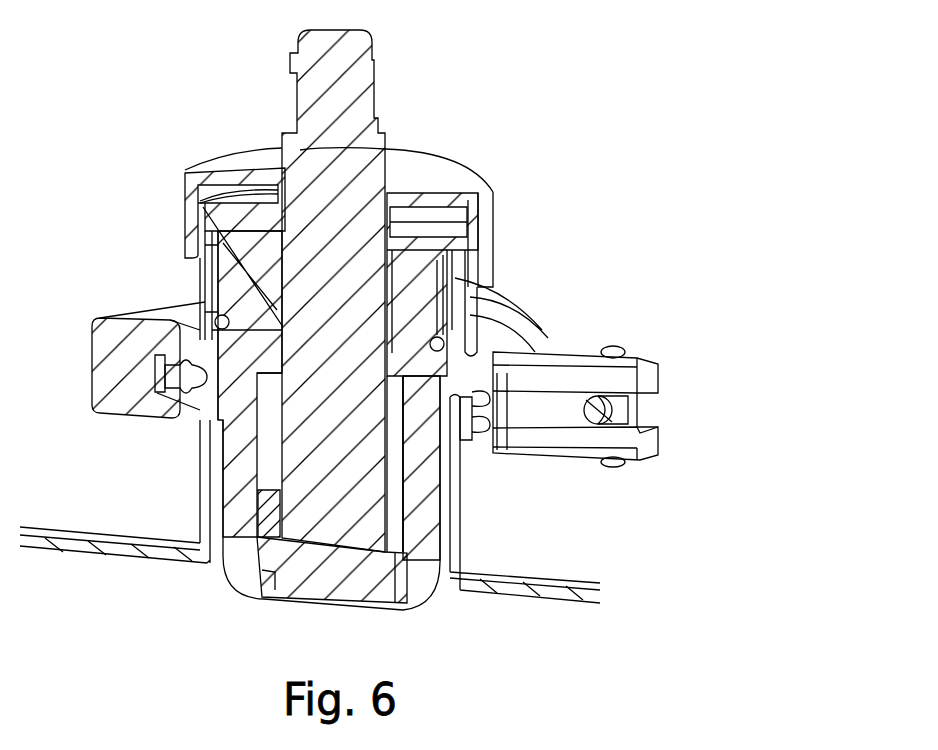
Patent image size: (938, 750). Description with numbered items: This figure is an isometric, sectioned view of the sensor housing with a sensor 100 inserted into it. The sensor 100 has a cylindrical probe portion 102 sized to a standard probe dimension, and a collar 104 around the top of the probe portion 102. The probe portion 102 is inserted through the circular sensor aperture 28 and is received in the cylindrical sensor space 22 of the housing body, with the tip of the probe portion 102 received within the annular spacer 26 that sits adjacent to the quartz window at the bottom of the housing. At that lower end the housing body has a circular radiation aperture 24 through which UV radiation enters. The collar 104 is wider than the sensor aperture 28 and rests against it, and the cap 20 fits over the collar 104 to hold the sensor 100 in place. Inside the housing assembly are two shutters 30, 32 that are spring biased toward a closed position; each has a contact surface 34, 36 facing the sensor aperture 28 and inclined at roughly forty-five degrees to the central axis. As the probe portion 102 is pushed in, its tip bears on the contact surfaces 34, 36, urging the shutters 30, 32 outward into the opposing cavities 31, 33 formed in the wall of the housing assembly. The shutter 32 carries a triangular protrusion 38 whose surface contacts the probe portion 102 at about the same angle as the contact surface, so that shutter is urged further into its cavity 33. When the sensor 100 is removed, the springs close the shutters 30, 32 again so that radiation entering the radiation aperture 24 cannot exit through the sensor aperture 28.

The sensor 100 is at (355, 148).
The collar 104 is at (470, 183).
The cap 20 is at (473, 183).
The sensor aperture 28 is at (380, 238).
The contact surface 34 is at (413, 275).
The cylindrical probe portion 102 is at (423, 317).
The shutter 30 is at (470, 307).
The cavity 31 is at (462, 350).
The sensor space 22 is at (395, 470).
The protrusion 38 is at (223, 302).
The shutter 32 is at (225, 287).
The contact surface 36 is at (237, 247).
The cavity 33 is at (163, 330).
The annular spacer 26 is at (265, 518).
The radiation aperture 24 is at (313, 583).